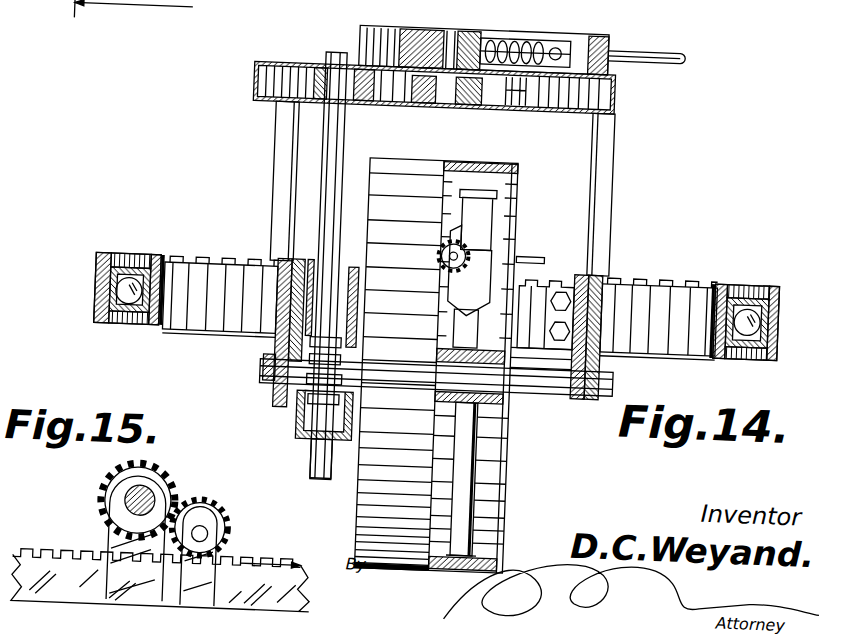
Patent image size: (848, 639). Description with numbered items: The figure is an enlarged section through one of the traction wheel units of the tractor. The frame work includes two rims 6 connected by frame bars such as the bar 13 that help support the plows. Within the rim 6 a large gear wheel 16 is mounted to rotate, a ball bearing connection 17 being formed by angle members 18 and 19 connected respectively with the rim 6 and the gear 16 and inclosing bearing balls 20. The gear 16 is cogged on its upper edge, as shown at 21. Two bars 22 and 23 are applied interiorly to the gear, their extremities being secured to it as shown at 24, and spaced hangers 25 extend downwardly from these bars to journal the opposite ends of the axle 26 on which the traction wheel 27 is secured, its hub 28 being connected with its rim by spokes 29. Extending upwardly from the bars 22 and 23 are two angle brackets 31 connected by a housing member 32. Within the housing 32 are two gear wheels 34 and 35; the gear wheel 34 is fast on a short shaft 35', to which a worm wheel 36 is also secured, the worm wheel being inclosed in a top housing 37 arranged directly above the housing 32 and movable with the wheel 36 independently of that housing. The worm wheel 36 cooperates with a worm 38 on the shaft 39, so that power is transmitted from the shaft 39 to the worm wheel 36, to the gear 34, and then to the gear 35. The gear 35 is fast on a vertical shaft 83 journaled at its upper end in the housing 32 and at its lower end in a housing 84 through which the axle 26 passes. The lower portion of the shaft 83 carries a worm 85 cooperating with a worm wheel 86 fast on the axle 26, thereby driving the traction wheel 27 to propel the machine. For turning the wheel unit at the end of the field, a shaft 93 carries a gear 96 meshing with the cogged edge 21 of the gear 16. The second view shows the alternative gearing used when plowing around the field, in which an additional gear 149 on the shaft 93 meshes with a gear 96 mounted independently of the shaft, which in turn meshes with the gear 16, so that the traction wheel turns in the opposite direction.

In FIG. 14, the rim 6 is at (93, 299).
In FIG. 14, the bar 13 is at (146, 11).
In FIG. 14, the gear wheel 16 is at (694, 238).
In FIG. 15, the gear wheel 16 is at (161, 582).
In FIG. 14, the ball bearing connection 17 is at (130, 281).
In FIG. 14, the angle member 18 is at (779, 291).
In FIG. 14, the angle member 19 is at (135, 321).
In FIG. 14, the bearing balls 20 is at (136, 301).
In FIG. 14, the cogged upper edge 21 is at (205, 265).
In FIG. 15, the cogged upper edge 21 is at (157, 544).
In FIG. 14, the bar 22 is at (577, 271).
In FIG. 14, the bar 23 is at (288, 270).
In FIG. 14, the bar extremity securement 24 is at (546, 315).
In FIG. 14, the hanger 25 is at (284, 356).
In FIG. 14, the shaft or axle 26 is at (529, 387).
In FIG. 14, the traction wheel 27 is at (529, 475).
In FIG. 14, the hub 28 is at (493, 404).
In FIG. 14, the spokes 29 is at (472, 503).
In FIG. 14, the angle bracket 31 is at (279, 160).
In FIG. 14, the housing member 32 is at (401, 108).
In FIG. 14, the gear wheel 34 is at (519, 88).
In FIG. 14, the gear wheel 35 is at (434, 72).
In FIG. 14, the short shaft 35' is at (482, 108).
In FIG. 14, the worm wheel 36 is at (410, 50).
In FIG. 14, the top housing 37 is at (509, 32).
In FIG. 14, the worm 38 is at (559, 32).
In FIG. 14, the shaft 39 is at (649, 42).
In FIG. 14, the vertical shaft 83 is at (340, 146).
In FIG. 14, the housing 84 is at (272, 366).
In FIG. 14, the worm 85 is at (301, 418).
In FIG. 14, the worm wheel 86 is at (300, 295).
In FIG. 14, the shaft 93 is at (532, 253).
In FIG. 15, the shaft 93 is at (164, 510).
In FIG. 14, the gear 96 is at (470, 251).
In FIG. 15, the gear 96 is at (238, 530).
In FIG. 15, the gear 149 is at (169, 477).